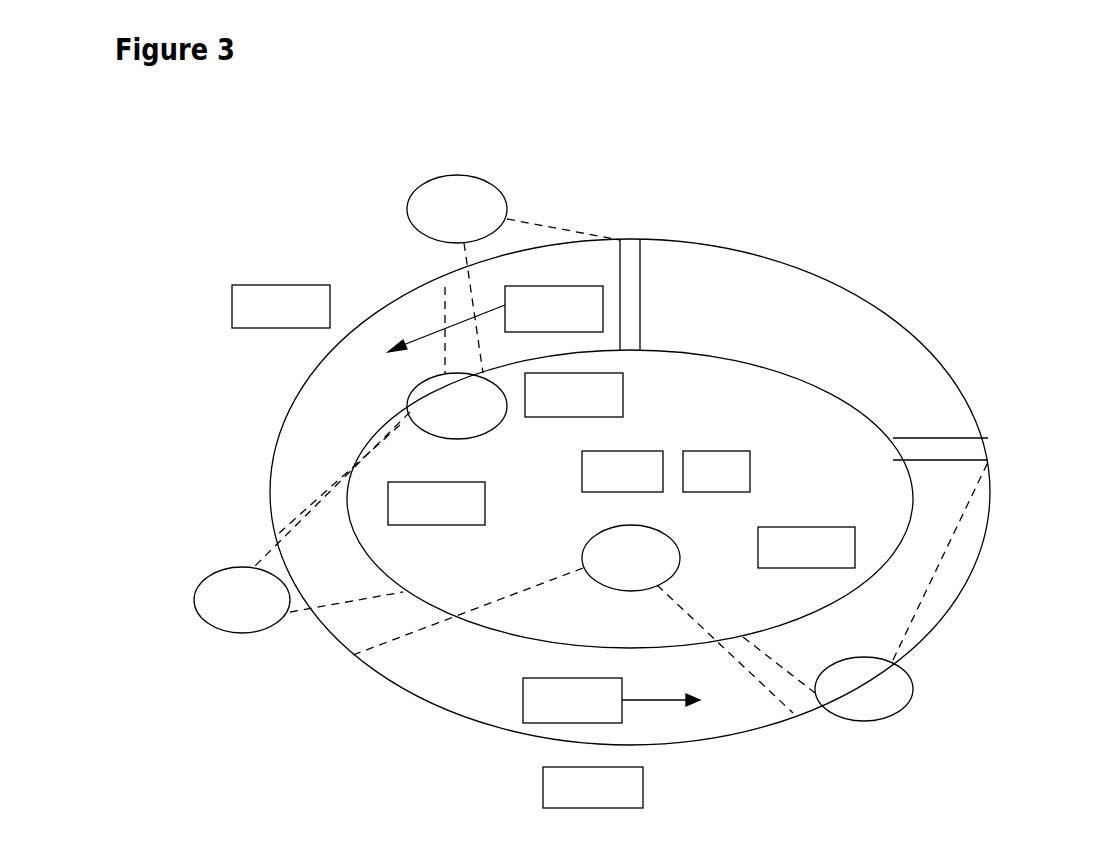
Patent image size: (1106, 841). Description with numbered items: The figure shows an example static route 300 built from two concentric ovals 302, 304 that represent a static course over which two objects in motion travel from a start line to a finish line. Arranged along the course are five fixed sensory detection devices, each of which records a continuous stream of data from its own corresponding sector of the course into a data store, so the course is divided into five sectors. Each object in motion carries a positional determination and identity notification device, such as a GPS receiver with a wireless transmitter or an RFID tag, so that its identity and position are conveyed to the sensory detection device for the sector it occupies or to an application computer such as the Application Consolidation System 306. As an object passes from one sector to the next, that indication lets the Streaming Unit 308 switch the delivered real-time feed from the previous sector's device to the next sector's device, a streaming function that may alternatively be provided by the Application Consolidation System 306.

The static route 300 is at (808, 80).
The concentric oval 302 is at (777, 265).
The concentric oval 304 is at (755, 368).
The Application Consolidation System 306 is at (622, 471).
The Streaming Unit 308 is at (716, 471).